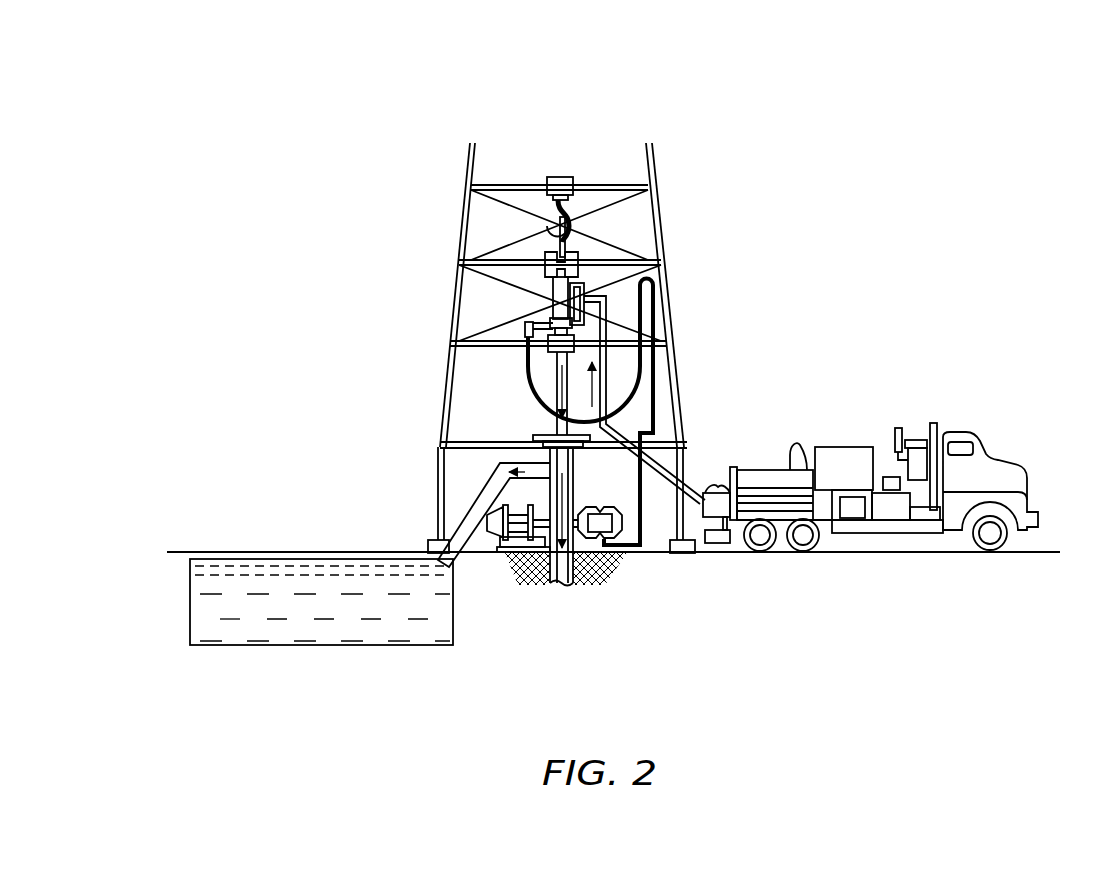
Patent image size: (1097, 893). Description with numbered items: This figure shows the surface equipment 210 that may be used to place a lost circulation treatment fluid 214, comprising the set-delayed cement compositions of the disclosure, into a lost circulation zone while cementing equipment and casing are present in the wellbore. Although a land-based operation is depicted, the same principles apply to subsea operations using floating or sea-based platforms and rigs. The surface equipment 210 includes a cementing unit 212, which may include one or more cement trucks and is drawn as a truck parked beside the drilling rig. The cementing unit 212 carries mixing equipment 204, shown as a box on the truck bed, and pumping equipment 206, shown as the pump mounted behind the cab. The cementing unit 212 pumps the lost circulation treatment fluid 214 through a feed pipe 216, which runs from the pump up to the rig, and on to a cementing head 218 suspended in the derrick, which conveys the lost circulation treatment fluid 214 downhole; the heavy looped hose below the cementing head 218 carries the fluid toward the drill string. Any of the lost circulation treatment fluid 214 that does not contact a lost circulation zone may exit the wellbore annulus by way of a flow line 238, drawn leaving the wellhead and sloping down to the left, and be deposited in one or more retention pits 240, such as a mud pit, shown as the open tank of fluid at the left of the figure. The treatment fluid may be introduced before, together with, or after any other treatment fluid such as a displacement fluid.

The surface equipment 210 is at (905, 187).
The cementing head 218 is at (596, 253).
The lost circulation treatment fluid 214 is at (527, 380).
The feed pipe 216 is at (678, 462).
The pumping equipment 206 is at (760, 470).
The mixing equipment 204 is at (855, 447).
The cementing unit 212 is at (926, 540).
The flow line 238 is at (480, 543).
The retention pit 240 is at (240, 647).